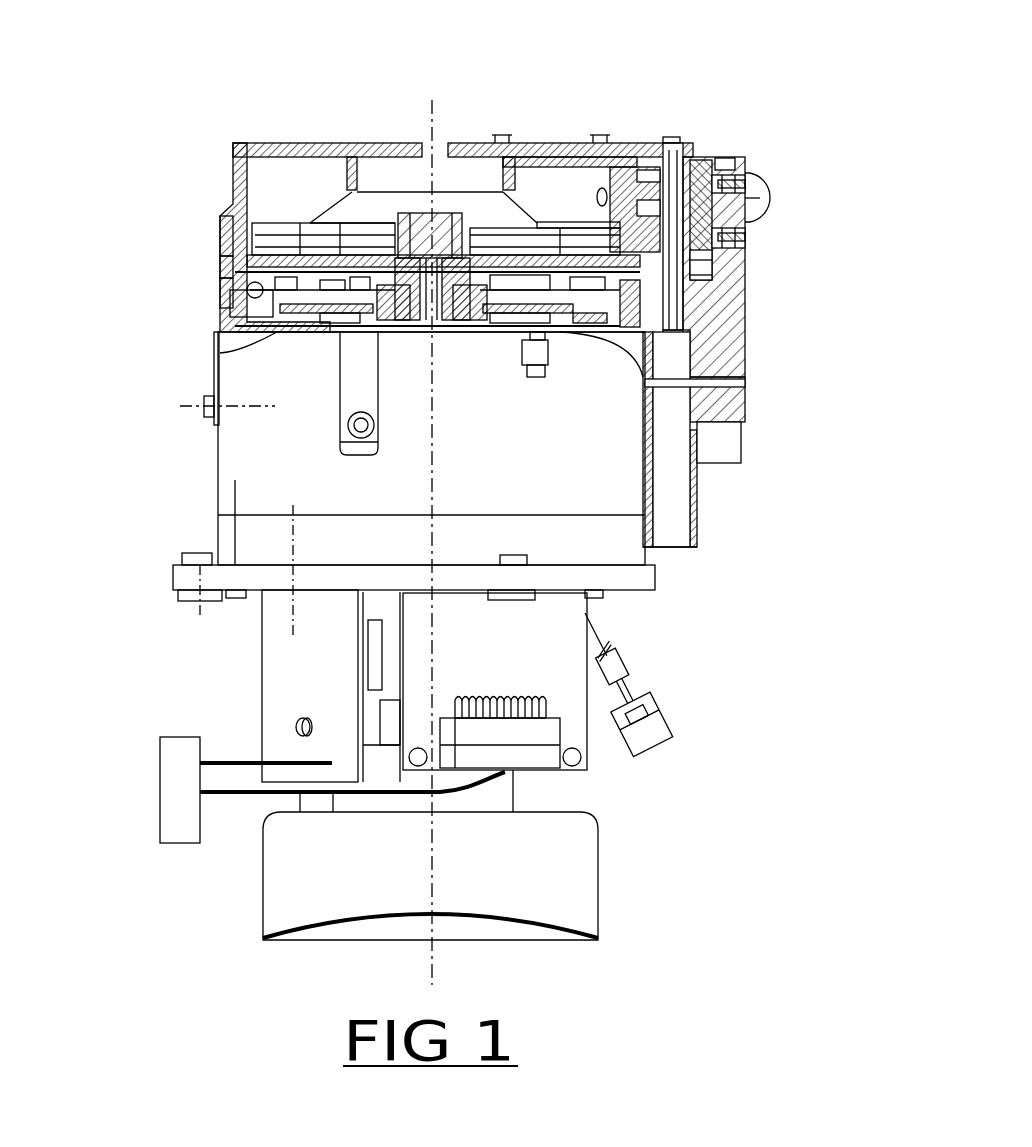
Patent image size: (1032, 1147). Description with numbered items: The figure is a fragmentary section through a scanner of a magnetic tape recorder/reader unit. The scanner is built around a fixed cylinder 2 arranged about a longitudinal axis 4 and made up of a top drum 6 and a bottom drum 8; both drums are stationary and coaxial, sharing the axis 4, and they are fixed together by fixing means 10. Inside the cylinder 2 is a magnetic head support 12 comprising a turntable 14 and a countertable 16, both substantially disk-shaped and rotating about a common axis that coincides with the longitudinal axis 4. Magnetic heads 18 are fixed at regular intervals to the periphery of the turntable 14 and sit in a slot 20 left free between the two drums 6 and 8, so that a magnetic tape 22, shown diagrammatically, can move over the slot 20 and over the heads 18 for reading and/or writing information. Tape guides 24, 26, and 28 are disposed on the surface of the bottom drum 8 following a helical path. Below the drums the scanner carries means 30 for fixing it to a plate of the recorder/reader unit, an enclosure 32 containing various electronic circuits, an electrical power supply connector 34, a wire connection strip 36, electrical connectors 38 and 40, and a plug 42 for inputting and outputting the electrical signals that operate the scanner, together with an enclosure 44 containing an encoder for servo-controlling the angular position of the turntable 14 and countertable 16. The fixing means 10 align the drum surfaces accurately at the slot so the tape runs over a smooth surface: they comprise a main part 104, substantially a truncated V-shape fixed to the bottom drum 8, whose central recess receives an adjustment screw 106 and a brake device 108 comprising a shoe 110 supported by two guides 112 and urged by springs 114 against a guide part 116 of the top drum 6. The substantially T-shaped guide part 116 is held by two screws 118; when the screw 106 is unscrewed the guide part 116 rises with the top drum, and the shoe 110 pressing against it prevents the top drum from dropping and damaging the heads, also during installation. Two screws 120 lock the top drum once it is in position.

The fixed cylinder 2 is at (206, 451).
The longitudinal axis 4 is at (452, 438).
The top drum 6 is at (233, 175).
The bottom drum 8 is at (292, 477).
The fixing means 10 is at (752, 384).
The magnetic head support 12 is at (338, 218).
The turntable 14 is at (312, 262).
The countertable 16 is at (240, 347).
The magnetic heads 18 is at (218, 283).
The slot 20 is at (220, 262).
The magnetic tape 22 is at (222, 215).
The tape guide 24 is at (216, 378).
The tape guide 26 is at (367, 380).
The tape guide 28 is at (540, 373).
The fixing means for the scanner 30 is at (183, 600).
The enclosure 32 is at (528, 673).
The electrical power supply connector 34 is at (640, 690).
The wire connection strip 36 is at (513, 733).
The electrical connector 38 is at (243, 763).
The electrical connector 40 is at (240, 795).
The plug 42 is at (183, 783).
The enclosure containing an encoder 44 is at (518, 878).
The main part 104 is at (720, 347).
The adjustment screw 106 is at (673, 140).
The brake device 108 is at (728, 215).
The shoe 110 is at (700, 140).
The guides 112 is at (733, 163).
The springs 114 is at (723, 258).
The guide part 116 is at (656, 140).
The screws 118 is at (612, 165).
The screws 120 is at (757, 200).